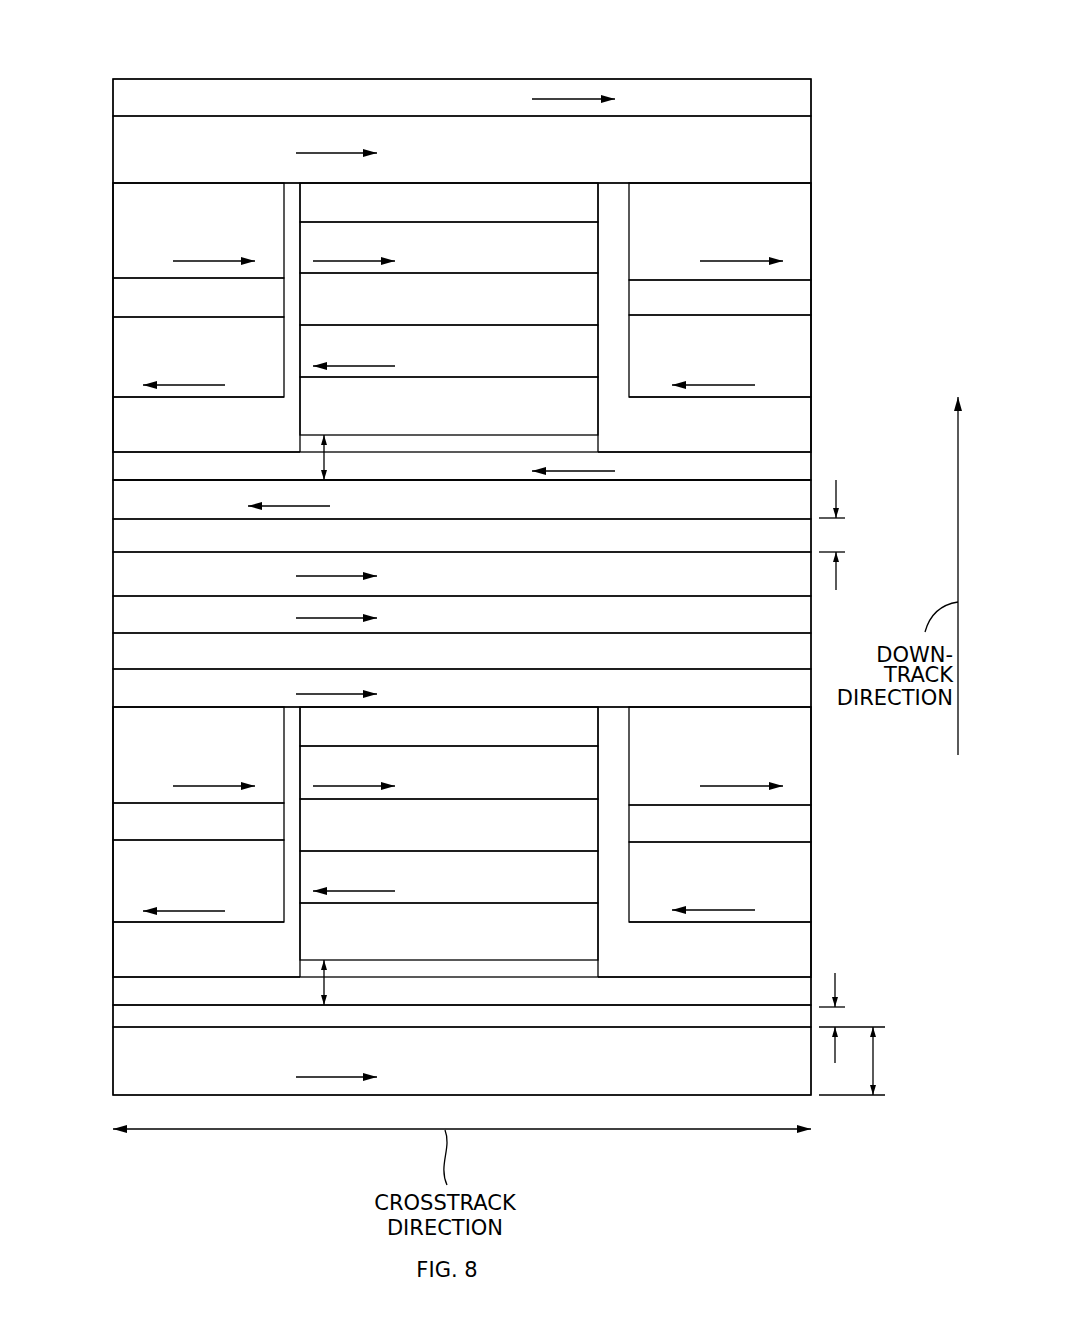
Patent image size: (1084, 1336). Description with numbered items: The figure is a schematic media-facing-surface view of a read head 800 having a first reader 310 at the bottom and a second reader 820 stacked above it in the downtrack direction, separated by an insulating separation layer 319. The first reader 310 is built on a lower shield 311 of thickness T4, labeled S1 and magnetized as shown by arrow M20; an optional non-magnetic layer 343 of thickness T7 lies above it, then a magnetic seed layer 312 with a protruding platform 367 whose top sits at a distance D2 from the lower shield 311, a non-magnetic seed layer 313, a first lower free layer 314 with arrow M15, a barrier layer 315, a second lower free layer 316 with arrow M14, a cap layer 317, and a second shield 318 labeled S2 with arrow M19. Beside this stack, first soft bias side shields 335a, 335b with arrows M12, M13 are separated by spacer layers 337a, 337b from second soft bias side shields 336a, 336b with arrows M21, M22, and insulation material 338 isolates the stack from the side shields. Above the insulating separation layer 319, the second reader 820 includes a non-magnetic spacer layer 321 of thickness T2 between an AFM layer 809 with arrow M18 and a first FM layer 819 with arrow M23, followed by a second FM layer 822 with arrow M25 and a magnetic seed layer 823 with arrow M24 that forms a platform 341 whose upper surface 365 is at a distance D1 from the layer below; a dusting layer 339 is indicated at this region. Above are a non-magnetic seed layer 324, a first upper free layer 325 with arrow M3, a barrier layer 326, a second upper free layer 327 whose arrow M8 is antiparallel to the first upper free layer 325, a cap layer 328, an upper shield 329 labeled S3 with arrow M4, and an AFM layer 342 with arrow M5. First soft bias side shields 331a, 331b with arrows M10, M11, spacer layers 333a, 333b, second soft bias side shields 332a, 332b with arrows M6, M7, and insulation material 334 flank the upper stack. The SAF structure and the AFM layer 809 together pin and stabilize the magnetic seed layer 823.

The read head 800 is at (163, 52).
The second reader 820 is at (95, 238).
The first reader 310 is at (92, 760).
The dusting layer 339 is at (125, 480).
The non-magnetic layer 343 is at (130, 1020).
The AFM layer 342 is at (438, 110).
The upper shield 329 is at (438, 163).
The cap layer 328 is at (510, 215).
The second upper free layer 327 is at (510, 263).
The barrier layer 326 is at (510, 313).
The first upper free layer 325 is at (510, 365).
The non-magnetic seed layer 324 is at (510, 417).
The magnetic seed layer 823 is at (438, 471).
The second FM layer 822 is at (438, 511).
The non-magnetic spacer layer 321 is at (438, 546).
The first FM layer 819 is at (438, 583).
The AFM layer 809 is at (438, 625).
The insulating separation layer 319 is at (438, 661).
The second shield 318 is at (438, 699).
The cap layer 317 is at (510, 738).
The second lower free layer 316 is at (510, 786).
The barrier layer 315 is at (510, 838).
The first lower free layer 314 is at (510, 889).
The non-magnetic seed layer 313 is at (510, 942).
The magnetic seed layer 312 is at (542, 998).
The lower shield 311 is at (438, 1075).
The second soft bias side shield 332a is at (165, 225).
The second soft bias side shield 332b is at (691, 225).
The spacer layer 333a is at (165, 310).
The spacer layer 333b is at (691, 310).
The first soft bias side shield 331a is at (165, 349).
The first soft bias side shield 331b is at (691, 349).
The insulation material 334 is at (172, 438).
The upper surface 365 is at (313, 435).
The platform 341 is at (583, 447).
The second soft bias side shield 336a is at (165, 751).
The second soft bias side shield 336b is at (691, 751).
The spacer layer 337a is at (165, 835).
The spacer layer 337b is at (691, 835).
The first soft bias side shield 335a is at (165, 873).
The first soft bias side shield 335b is at (691, 873).
The insulation material 338 is at (172, 963).
The platform 367 is at (313, 965).
The magnetization arrow M3 is at (378, 365).
The magnetization arrow M4 is at (322, 152).
The magnetization arrow M5 is at (560, 97).
The magnetization arrow M6 is at (200, 260).
The magnetization arrow M7 is at (728, 260).
The magnetization arrow M8 is at (366, 260).
The magnetization arrow M10 is at (183, 385).
The magnetization arrow M11 is at (713, 385).
The magnetization arrow M12 is at (183, 910).
The magnetization arrow M13 is at (713, 910).
The magnetization arrow M14 is at (366, 785).
The magnetization arrow M15 is at (380, 890).
The magnetization arrow M18 is at (312, 618).
The magnetization arrow M19 is at (312, 694).
The magnetization arrow M20 is at (322, 1076).
The magnetization arrow M21 is at (200, 785).
The magnetization arrow M22 is at (728, 785).
The magnetization arrow M23 is at (312, 576).
The magnetization arrow M24 is at (573, 470).
The magnetization arrow M25 is at (313, 505).
The shield S1 is at (553, 1066).
The shield S2 is at (553, 690).
The shield S3 is at (553, 158).
The distance D1 is at (328, 459).
The distance D2 is at (328, 985).
The thickness T2 is at (840, 540).
The thickness T4 is at (875, 1060).
The thickness T7 is at (837, 1017).